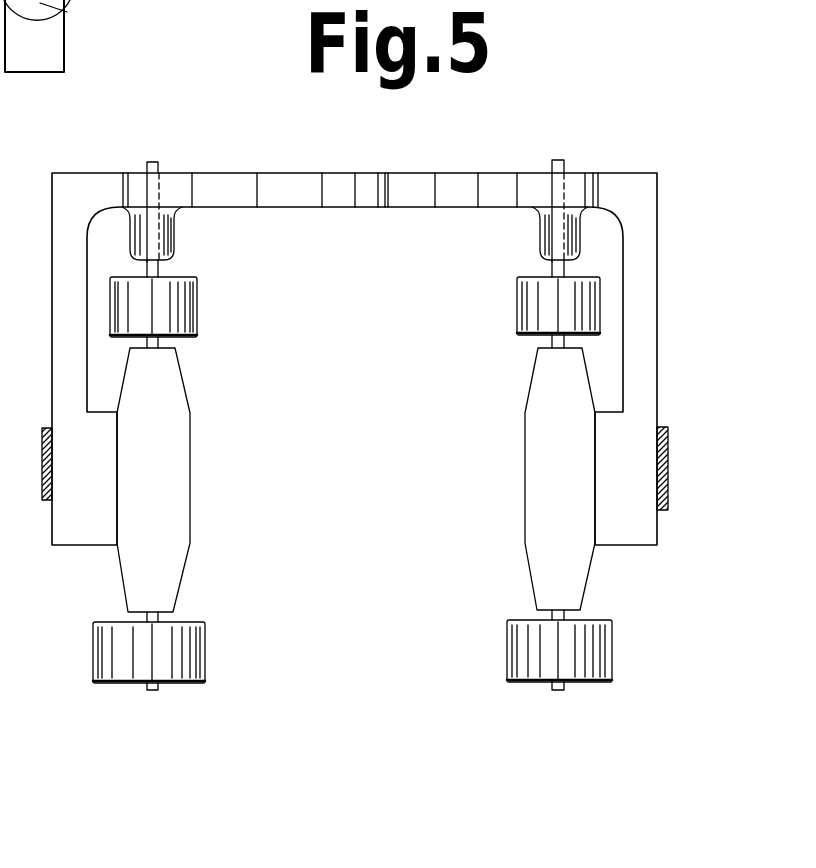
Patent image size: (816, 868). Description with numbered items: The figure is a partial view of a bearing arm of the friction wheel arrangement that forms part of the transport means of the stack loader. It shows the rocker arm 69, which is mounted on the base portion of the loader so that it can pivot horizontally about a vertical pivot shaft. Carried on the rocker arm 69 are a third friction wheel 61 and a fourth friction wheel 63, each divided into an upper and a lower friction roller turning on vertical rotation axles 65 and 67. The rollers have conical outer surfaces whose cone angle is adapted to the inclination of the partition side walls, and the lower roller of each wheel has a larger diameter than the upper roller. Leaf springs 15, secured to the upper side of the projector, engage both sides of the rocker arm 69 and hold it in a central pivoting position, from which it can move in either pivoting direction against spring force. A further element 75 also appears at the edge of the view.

The leaf springs 15 is at (43, 453).
The third friction wheel 61 is at (171, 314).
The fourth friction wheel 63 is at (553, 304).
The vertical rotation axle 65 is at (154, 162).
The vertical rotation axle 67 is at (560, 157).
The rocker arm 69 is at (415, 190).
The bracket 75 is at (62, 8).